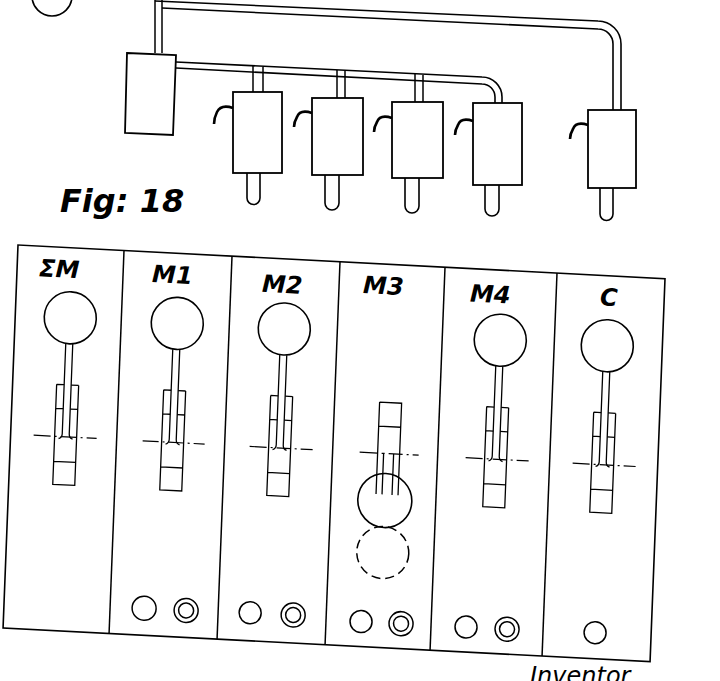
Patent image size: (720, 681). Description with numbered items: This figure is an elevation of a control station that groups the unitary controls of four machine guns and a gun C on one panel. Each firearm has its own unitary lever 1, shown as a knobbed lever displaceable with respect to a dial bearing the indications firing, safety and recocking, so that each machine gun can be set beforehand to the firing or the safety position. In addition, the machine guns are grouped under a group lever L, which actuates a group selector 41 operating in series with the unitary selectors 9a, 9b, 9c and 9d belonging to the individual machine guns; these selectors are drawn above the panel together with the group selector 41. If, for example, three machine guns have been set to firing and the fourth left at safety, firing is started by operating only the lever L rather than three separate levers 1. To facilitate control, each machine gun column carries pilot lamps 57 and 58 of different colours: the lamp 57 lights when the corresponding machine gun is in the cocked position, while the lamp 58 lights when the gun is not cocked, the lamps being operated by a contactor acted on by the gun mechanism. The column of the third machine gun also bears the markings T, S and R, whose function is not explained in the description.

The group selector 41 is at (138, 58).
The unitary selector 9a is at (235, 137).
The unitary selector 9b is at (320, 134).
The unitary selector 9c is at (397, 143).
The unitary selector 9d is at (483, 159).
The pilot lamp 57 is at (144, 595).
The pilot lamp 58 is at (187, 597).
The group lever L is at (67, 388).
The unitary lever 1 is at (230, 397).
The timer column T is at (396, 406).
The switch knob S is at (395, 500).
The alternate knob position R is at (393, 553).